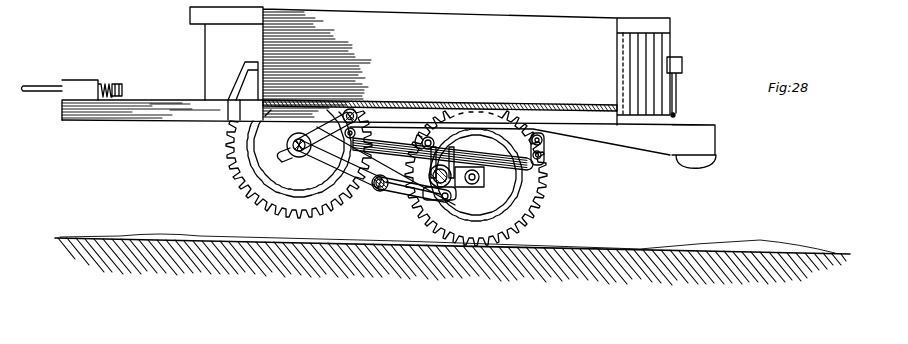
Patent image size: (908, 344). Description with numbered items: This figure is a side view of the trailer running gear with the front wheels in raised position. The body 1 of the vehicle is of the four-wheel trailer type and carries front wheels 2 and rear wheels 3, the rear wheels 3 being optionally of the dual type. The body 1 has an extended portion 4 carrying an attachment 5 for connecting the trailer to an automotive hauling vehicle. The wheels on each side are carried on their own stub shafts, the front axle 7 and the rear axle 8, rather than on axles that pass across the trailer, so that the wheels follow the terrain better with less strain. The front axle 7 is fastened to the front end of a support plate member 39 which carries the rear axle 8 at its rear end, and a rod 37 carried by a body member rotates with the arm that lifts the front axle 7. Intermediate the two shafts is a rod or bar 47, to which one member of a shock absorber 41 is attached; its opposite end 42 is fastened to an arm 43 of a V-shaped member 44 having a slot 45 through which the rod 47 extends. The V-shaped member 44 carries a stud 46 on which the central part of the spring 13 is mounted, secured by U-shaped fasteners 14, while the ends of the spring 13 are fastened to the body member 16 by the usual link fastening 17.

The body 1 is at (206, 73).
The front wheels 2 is at (230, 172).
The rear wheels 3 is at (545, 192).
The extended portion 4 is at (152, 121).
The attachment 5 is at (88, 82).
The front axle 7 is at (297, 145).
The rear axle 8 is at (480, 180).
The spring 13 is at (398, 157).
The U-shaped fasteners 14 is at (462, 148).
The body member 16 is at (214, 108).
The link fastening 17 is at (548, 150).
The rod 37 is at (342, 121).
The support plate member 39 is at (318, 168).
The shock absorber 41 is at (286, 224).
The opposite end of shock absorber 42 is at (423, 148).
The arm 43 is at (435, 160).
The V-shaped member 44 is at (382, 195).
The slot 45 is at (450, 199).
The stud 46 is at (456, 165).
The rod or bar 47 is at (366, 204).